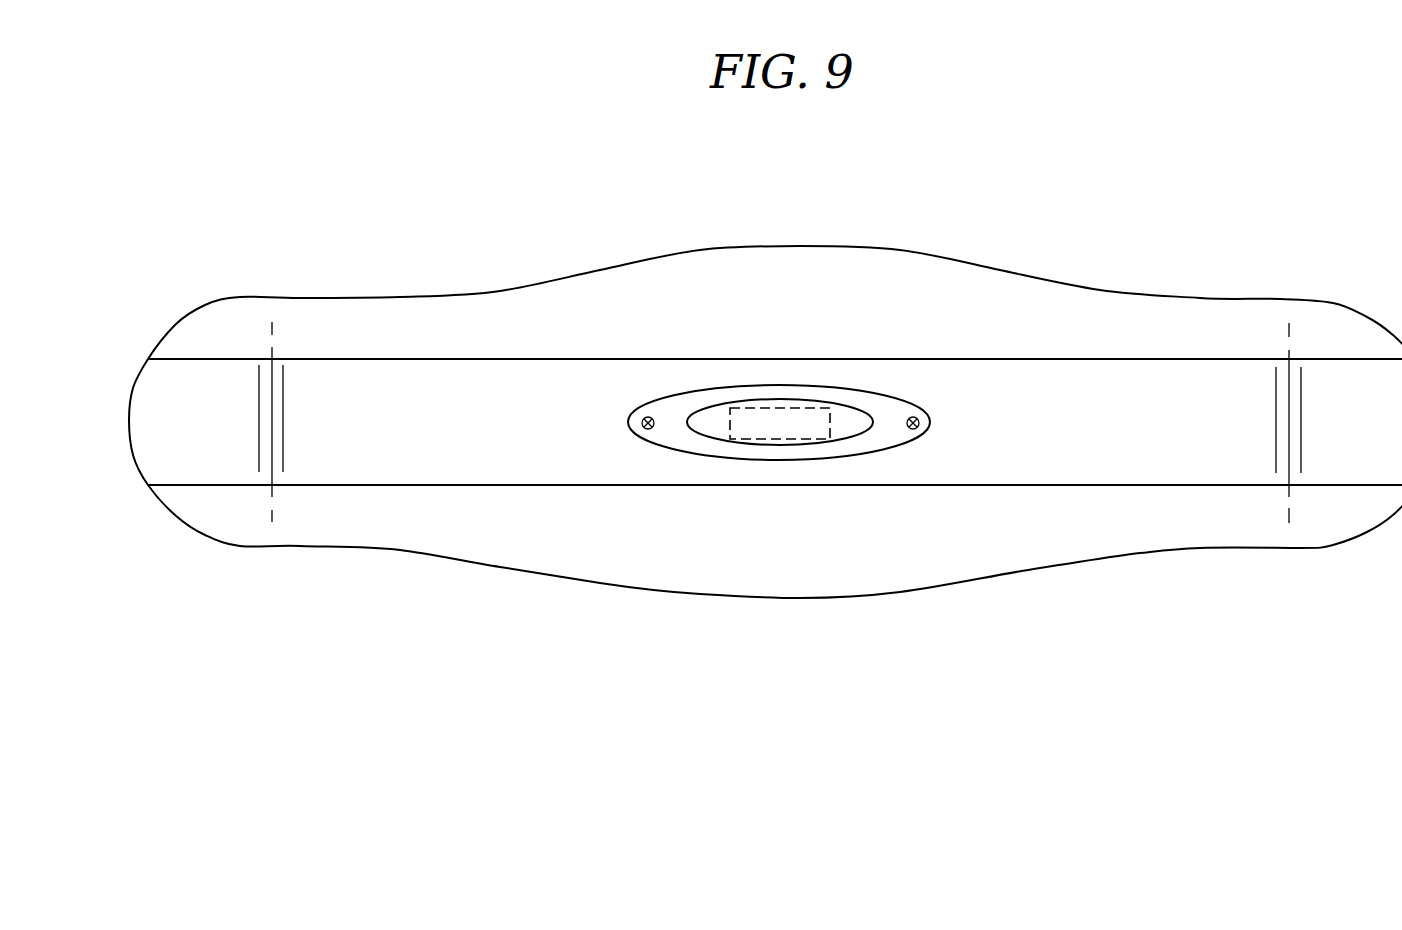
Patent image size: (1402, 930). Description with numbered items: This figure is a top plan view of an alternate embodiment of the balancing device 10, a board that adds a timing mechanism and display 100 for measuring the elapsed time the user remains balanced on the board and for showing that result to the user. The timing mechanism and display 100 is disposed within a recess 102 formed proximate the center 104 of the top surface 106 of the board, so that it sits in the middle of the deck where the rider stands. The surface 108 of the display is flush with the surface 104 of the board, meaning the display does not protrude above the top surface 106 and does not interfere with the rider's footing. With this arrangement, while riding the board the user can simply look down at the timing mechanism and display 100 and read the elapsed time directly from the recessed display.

The balancing device 10 is at (1157, 215).
The timing mechanism and display 100 is at (782, 440).
The recess 102 is at (862, 457).
The center 104 is at (797, 370).
The top surface 106 is at (1172, 456).
The surface of the display 108 is at (672, 406).